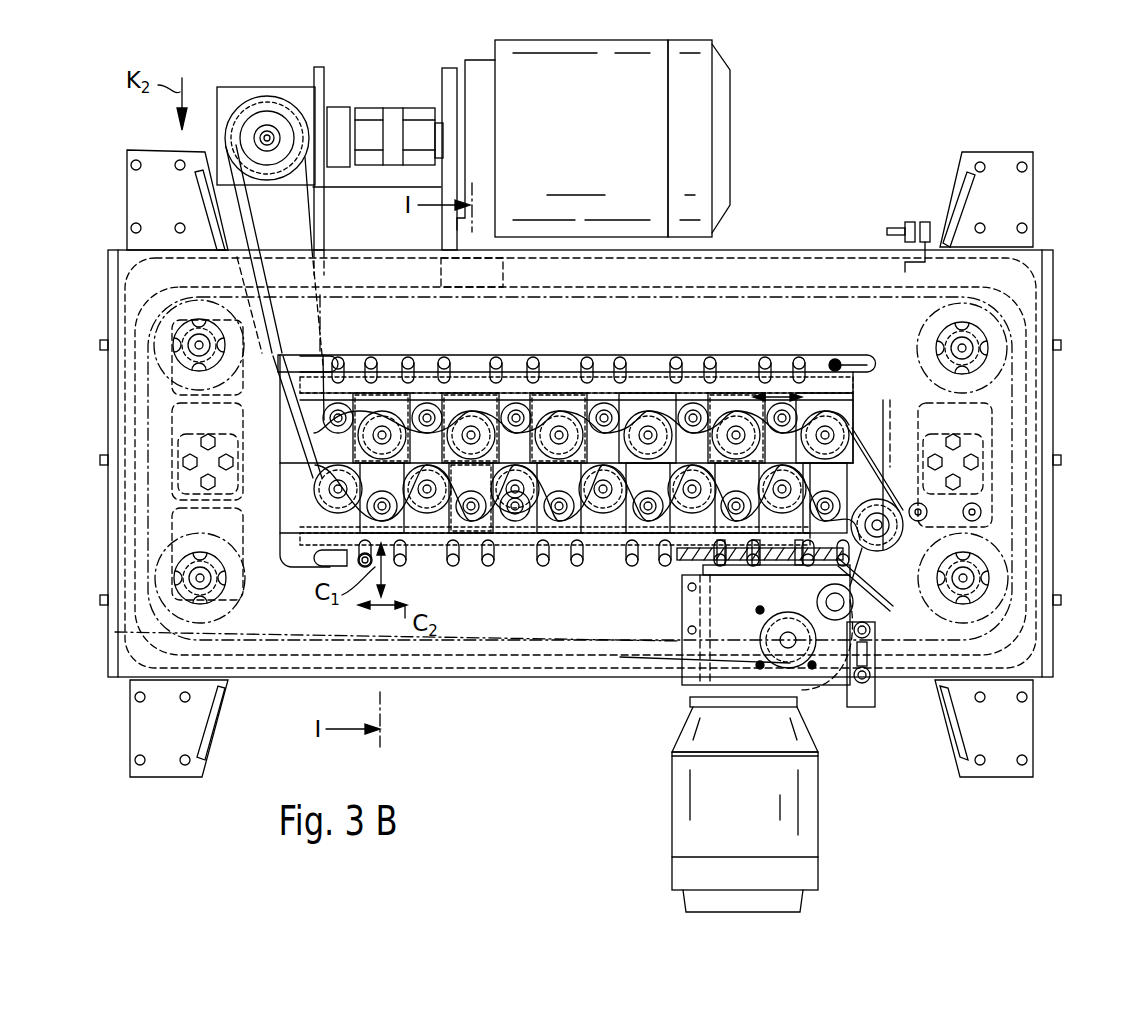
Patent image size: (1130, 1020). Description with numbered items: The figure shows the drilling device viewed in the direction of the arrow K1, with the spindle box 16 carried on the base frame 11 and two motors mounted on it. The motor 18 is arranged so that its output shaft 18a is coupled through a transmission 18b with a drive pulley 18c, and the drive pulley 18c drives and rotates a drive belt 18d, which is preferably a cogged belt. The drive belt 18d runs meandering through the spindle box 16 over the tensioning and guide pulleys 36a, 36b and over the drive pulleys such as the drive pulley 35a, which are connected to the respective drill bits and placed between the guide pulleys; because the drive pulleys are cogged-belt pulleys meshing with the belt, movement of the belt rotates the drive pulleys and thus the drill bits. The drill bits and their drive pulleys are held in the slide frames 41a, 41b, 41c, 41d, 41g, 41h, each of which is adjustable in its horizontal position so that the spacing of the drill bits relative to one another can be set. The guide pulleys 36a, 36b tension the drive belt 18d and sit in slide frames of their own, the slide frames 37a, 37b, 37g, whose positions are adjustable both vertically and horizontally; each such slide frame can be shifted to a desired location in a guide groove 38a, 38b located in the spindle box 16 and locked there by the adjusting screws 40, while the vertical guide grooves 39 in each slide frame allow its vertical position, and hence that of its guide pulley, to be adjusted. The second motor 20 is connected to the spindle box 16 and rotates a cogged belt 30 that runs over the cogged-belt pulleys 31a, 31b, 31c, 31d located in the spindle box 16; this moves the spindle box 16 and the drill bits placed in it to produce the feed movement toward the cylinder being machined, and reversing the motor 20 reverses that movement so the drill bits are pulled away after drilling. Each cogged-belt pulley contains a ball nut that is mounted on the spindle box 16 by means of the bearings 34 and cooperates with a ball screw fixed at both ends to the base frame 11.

The base frame 11 is at (880, 267).
The spindle box 16 is at (638, 310).
The motor 18 is at (650, 82).
The output shaft 18a is at (437, 120).
The transmission 18b is at (260, 92).
The drive pulley 18c is at (243, 110).
The drive belt 18d is at (222, 183).
The motor 20 is at (683, 787).
The cogged belt 30 is at (660, 640).
The cogged-belt pulley 31a is at (162, 332).
The cogged-belt pulley 31b is at (180, 598).
The cogged-belt pulley 31c is at (985, 610).
The cogged-belt pulley 31d is at (1000, 342).
The bearings 34 is at (313, 225).
The drive pulley 35a is at (393, 407).
The guide pulley 36a is at (313, 375).
The guide pulley 36b is at (445, 372).
The slide frame 37a is at (352, 360).
The slide frame 37b is at (421, 410).
The slide frame 37g is at (235, 585).
The guide groove 38a is at (475, 365).
The guide groove 38b is at (515, 563).
The vertical guide grooves 39 is at (632, 383).
The adjusting screws 40 is at (620, 357).
The slide frame 41a is at (385, 390).
The slide frame 41b is at (500, 387).
The slide frame 41c is at (532, 362).
The slide frame 41d is at (680, 395).
The slide frame 41g is at (215, 483).
The slide frame 41h is at (435, 530).